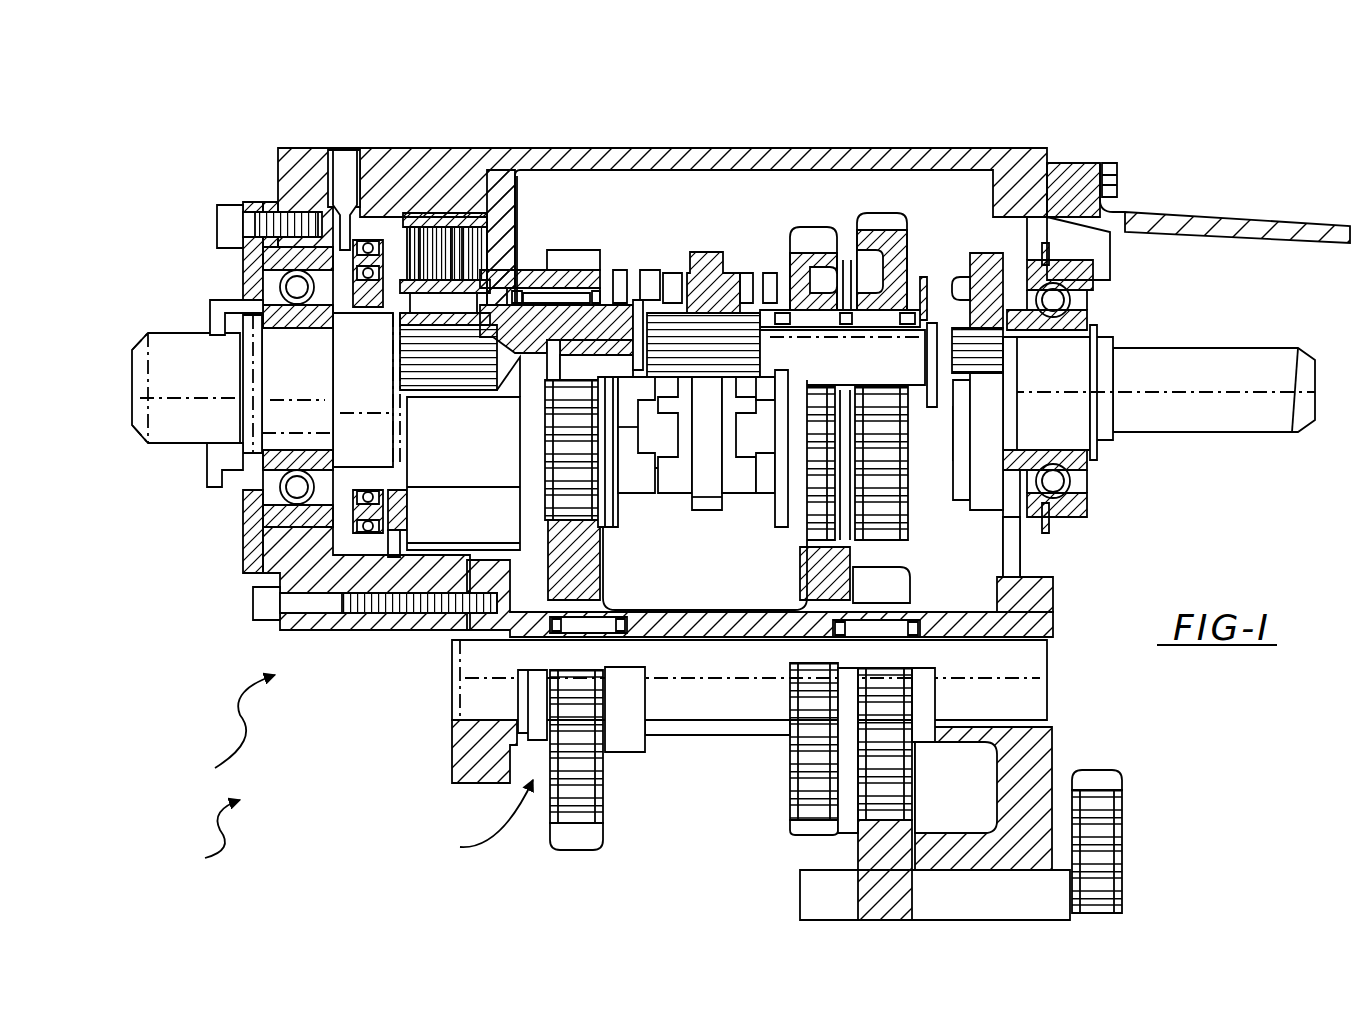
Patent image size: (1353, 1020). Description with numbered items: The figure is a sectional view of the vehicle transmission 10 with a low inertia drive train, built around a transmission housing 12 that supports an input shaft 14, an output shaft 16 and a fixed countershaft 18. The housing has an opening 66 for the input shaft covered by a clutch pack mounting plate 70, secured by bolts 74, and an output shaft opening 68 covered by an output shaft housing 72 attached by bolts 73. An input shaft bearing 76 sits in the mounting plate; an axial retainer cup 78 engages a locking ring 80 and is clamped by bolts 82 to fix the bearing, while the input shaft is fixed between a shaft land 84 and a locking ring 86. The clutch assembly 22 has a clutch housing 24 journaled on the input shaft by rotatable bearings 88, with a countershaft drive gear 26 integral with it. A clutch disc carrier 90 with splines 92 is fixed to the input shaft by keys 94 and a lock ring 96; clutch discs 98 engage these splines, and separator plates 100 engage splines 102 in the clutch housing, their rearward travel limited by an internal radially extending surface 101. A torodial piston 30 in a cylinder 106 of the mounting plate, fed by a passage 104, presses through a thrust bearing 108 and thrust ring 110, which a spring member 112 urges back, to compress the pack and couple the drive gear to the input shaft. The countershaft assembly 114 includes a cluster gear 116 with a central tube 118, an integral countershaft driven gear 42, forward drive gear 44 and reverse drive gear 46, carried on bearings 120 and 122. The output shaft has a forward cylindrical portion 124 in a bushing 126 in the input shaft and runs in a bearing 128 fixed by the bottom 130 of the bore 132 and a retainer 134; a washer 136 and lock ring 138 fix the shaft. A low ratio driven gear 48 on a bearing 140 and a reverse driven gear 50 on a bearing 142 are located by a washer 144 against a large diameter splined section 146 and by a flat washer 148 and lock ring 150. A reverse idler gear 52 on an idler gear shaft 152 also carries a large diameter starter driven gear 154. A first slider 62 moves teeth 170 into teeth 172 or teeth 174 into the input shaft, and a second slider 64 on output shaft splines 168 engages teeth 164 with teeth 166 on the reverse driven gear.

The vehicle transmission 10 is at (206, 839).
The transmission housing 12 is at (718, 148).
The input shaft 14 is at (163, 430).
The output shaft 16 is at (1257, 347).
The countershaft 18 is at (447, 697).
The clutch assembly 22 is at (228, 729).
The clutch housing 24 is at (435, 225).
The countershaft drive gear 26 is at (615, 340).
The torodial piston 30 is at (267, 577).
The countershaft driven gear 42 is at (553, 837).
The forward drive gear 44 is at (790, 797).
The reverse drive gear 46 is at (1053, 618).
The low ratio driven gear 48 is at (777, 300).
The reverse driven gear 50 is at (862, 205).
The reverse idler gear 52 is at (857, 853).
The first slider 62 is at (690, 513).
The second slider 64 is at (990, 510).
The opening 66 is at (512, 217).
The output shaft opening 68 is at (1023, 580).
The clutch pack mounting plate 70 is at (453, 160).
The output shaft housing 72 is at (1240, 217).
The bolts 73 is at (1120, 185).
The bolts 74 is at (250, 620).
The input shaft bearing 76 is at (260, 290).
The axial retainer cup 78 is at (262, 210).
The locking ring 80 is at (273, 540).
The bolts 82 is at (225, 205).
The shaft land 84 is at (300, 365).
The locking ring 86 is at (217, 325).
The rotatable bearings 88 is at (593, 260).
The clutch disc carrier 90 is at (397, 307).
The splines 92 is at (427, 367).
The keys 94 is at (427, 310).
The lock ring 96 is at (393, 430).
The clutch discs 98 is at (412, 230).
The separator plates 100 is at (457, 230).
The internal radially extending surface 101 is at (530, 250).
The splines 102 is at (502, 177).
The passage 104 is at (338, 160).
The cylinder 106 is at (353, 523).
The thrust bearing 108 is at (403, 497).
The thrust ring 110 is at (407, 513).
The spring member 112 is at (390, 585).
The countershaft assembly 114 is at (475, 819).
The cluster gear 116 is at (625, 740).
The central tube 118 is at (710, 717).
The bearing 120 is at (600, 630).
The bearing 122 is at (880, 633).
The forward cylindrical portion 124 is at (520, 390).
The bushing 126 is at (623, 347).
The bearing 128 is at (1093, 487).
The bottom 130 is at (1063, 287).
The bore 132 is at (1093, 280).
The retainer 134 is at (1050, 247).
The washer 136 is at (1067, 313).
The lock ring 138 is at (1093, 457).
The bearing 140 is at (757, 300).
The bearing 142 is at (890, 310).
The washer 144 is at (727, 307).
The large diameter splined section 146 is at (695, 330).
The flat washer 148 is at (922, 293).
The lock ring 150 is at (952, 277).
The idler gear shaft 152 is at (928, 867).
The large diameter starter driven gear 154 is at (1123, 840).
The teeth 164 is at (947, 487).
The teeth 166 is at (947, 443).
The output shaft splines 168 is at (987, 360).
The teeth 170 is at (733, 497).
The teeth 172 is at (760, 467).
The teeth 174 is at (672, 470).